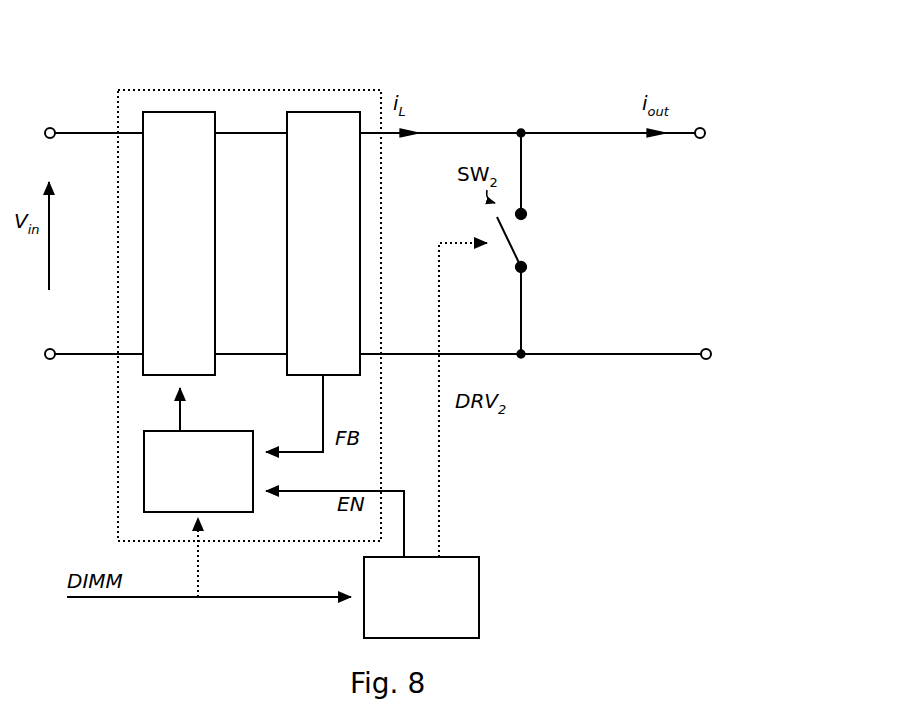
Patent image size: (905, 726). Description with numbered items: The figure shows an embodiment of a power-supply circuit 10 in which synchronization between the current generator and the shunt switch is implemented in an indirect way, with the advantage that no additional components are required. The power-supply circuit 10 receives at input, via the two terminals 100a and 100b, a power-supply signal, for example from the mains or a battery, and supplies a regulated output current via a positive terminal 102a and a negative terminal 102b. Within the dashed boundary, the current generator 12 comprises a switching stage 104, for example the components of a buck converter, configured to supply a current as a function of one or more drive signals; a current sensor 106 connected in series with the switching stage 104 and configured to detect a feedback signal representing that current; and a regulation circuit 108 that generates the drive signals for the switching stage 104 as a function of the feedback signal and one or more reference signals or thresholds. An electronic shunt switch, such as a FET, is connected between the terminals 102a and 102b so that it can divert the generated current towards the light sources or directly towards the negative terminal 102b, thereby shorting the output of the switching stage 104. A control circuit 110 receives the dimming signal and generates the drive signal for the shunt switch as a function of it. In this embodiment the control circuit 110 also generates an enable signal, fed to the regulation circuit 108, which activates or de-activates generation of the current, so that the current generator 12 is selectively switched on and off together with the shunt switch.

The power-supply circuit 10 is at (605, 45).
The current generator 12 is at (160, 87).
The switching stage 104 is at (190, 112).
The current sensor 106 is at (331, 112).
The regulation circuit 108 is at (152, 441).
The control circuit 110 is at (447, 564).
The input terminal 100a is at (52, 127).
The input terminal 100b is at (52, 348).
The positive terminal 102a is at (702, 127).
The negative terminal 102b is at (708, 348).